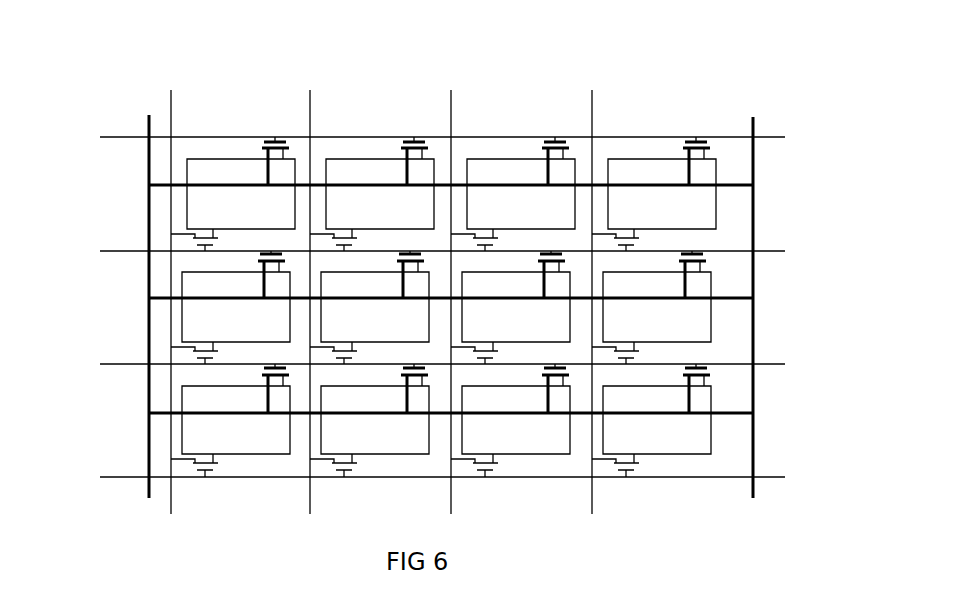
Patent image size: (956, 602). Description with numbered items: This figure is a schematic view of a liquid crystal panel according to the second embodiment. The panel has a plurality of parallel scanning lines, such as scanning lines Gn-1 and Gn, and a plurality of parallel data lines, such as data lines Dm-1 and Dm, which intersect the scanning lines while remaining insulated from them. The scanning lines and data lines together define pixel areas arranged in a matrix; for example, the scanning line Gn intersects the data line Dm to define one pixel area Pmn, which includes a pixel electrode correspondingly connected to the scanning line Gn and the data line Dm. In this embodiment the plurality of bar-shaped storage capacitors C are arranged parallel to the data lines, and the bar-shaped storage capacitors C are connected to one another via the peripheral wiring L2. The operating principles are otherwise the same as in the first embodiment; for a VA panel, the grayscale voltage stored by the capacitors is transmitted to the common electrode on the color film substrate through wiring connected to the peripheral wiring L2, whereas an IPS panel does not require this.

The peripheral wiring L2 is at (148, 114).
The data line Dm-1 is at (176, 283).
The data line Dm is at (308, 283).
The scanning line Gn-1 is at (416, 141).
The scanning line Gn is at (416, 254).
The bar-shaped storage capacitor C is at (435, 300).
The pixel area Pmn is at (372, 194).